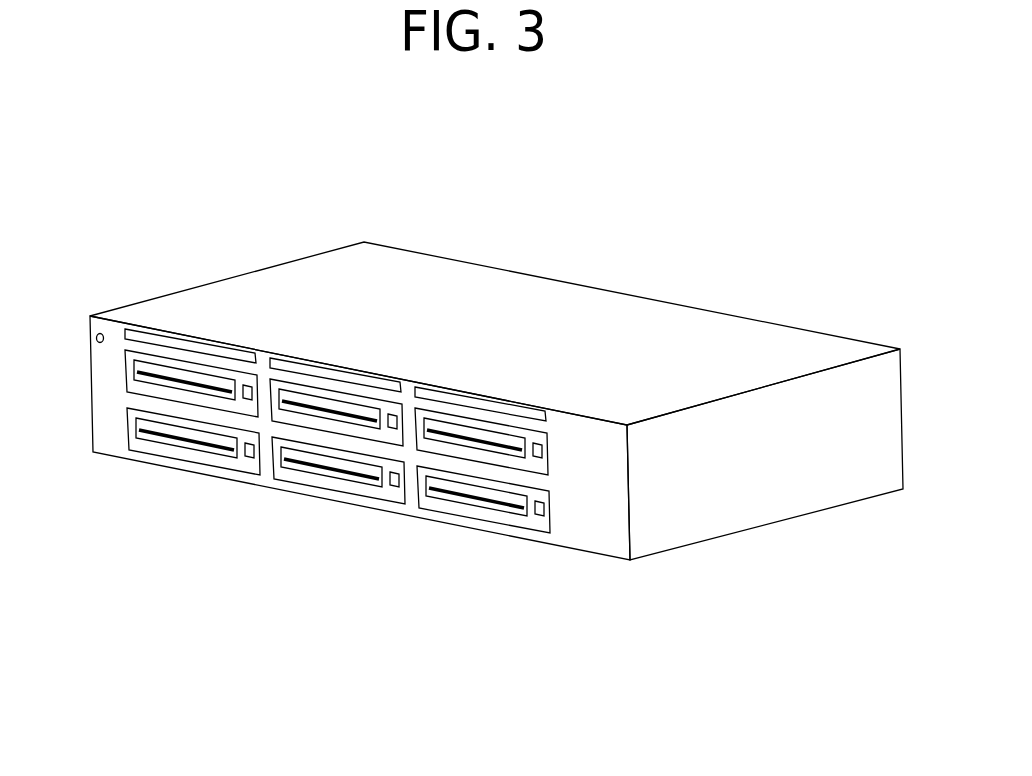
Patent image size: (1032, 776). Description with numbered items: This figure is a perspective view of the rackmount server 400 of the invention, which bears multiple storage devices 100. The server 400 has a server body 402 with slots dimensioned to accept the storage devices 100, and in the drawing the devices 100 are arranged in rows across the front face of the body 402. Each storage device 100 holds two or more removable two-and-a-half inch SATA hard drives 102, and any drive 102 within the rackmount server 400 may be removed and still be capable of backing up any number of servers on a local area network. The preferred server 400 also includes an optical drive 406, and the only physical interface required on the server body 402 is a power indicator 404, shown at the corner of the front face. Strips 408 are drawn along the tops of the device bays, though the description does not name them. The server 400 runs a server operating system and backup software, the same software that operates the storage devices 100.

The rackmount server 400 is at (231, 162).
The server body 402 is at (781, 353).
The power indicator 404 is at (104, 336).
The optical drive 406 is at (257, 353).
The bay rail strips 408 is at (363, 375).
The storage device 100 is at (137, 363).
The hard drive 102 is at (180, 450).